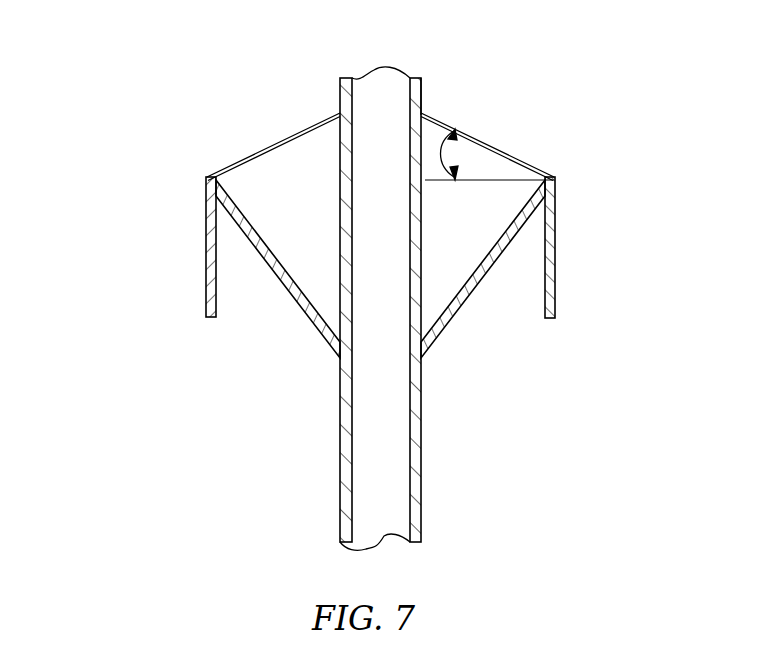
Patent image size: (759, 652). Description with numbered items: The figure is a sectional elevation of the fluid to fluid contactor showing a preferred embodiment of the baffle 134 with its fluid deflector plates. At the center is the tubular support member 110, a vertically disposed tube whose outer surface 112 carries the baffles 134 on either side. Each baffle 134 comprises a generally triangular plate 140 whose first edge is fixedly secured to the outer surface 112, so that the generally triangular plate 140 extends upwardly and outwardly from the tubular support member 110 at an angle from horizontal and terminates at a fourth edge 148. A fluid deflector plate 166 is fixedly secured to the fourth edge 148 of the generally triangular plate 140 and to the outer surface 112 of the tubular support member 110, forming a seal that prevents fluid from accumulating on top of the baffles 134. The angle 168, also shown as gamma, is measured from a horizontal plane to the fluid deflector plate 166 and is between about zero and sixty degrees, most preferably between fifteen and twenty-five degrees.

The tubular support member 110 is at (372, 100).
The outer surface 112 is at (422, 88).
The baffle 134 is at (160, 265).
The generally triangular plate 140 is at (278, 213).
The fourth edge 148 is at (207, 177).
The fluid deflector plate 166 is at (248, 155).
The angle 168 is at (477, 117).